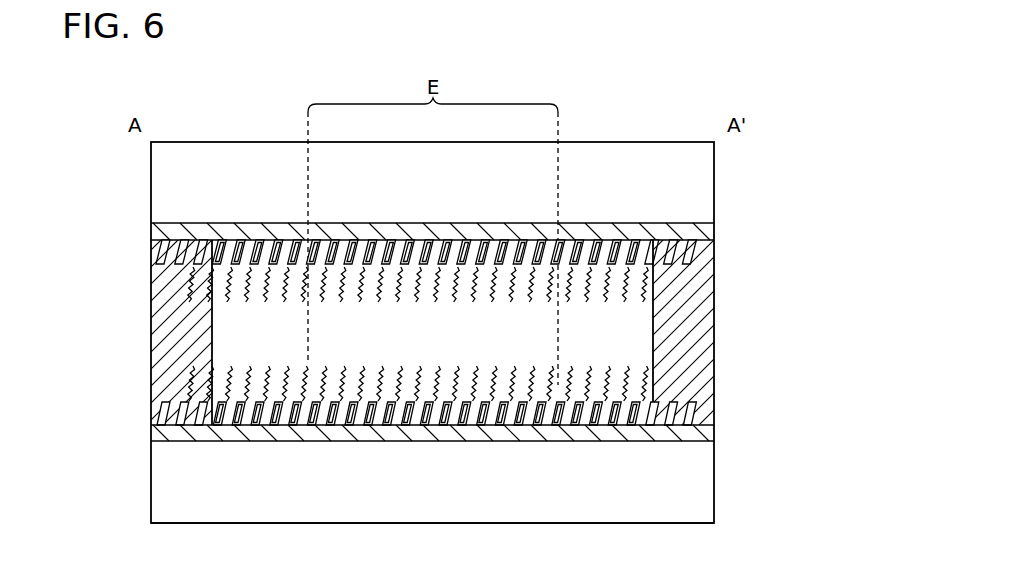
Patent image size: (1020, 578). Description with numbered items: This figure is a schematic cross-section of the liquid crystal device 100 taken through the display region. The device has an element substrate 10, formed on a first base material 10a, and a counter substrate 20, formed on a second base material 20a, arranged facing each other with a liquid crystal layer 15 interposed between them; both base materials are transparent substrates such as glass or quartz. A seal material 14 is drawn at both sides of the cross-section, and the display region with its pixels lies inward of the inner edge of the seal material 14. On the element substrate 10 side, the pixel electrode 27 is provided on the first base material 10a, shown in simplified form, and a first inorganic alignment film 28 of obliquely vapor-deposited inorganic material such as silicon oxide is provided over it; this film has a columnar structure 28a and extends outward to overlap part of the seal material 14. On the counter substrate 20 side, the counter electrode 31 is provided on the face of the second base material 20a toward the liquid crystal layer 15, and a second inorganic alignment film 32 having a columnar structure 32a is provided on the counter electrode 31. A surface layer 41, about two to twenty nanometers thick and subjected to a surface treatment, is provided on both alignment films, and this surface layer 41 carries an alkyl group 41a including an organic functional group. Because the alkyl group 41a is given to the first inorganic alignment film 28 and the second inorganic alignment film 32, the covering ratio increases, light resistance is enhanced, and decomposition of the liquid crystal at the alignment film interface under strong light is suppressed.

The liquid crystal device 100 is at (694, 87).
The element substrate 10 is at (489, 455).
The first base material 10a is at (469, 497).
The counter substrate 20 is at (489, 223).
The second base material 20a is at (714, 181).
The seal material 14 is at (714, 312).
The liquid crystal layer 15 is at (645, 357).
The pixel electrode 27 is at (714, 428).
The first inorganic alignment film 28 is at (718, 405).
The columnar structure 28a is at (590, 383).
The counter electrode 31 is at (714, 228).
The second inorganic alignment film 32 is at (473, 260).
The columnar structure 32a is at (629, 285).
The surface layer 41 is at (359, 283).
The alkyl group 41a is at (459, 383).